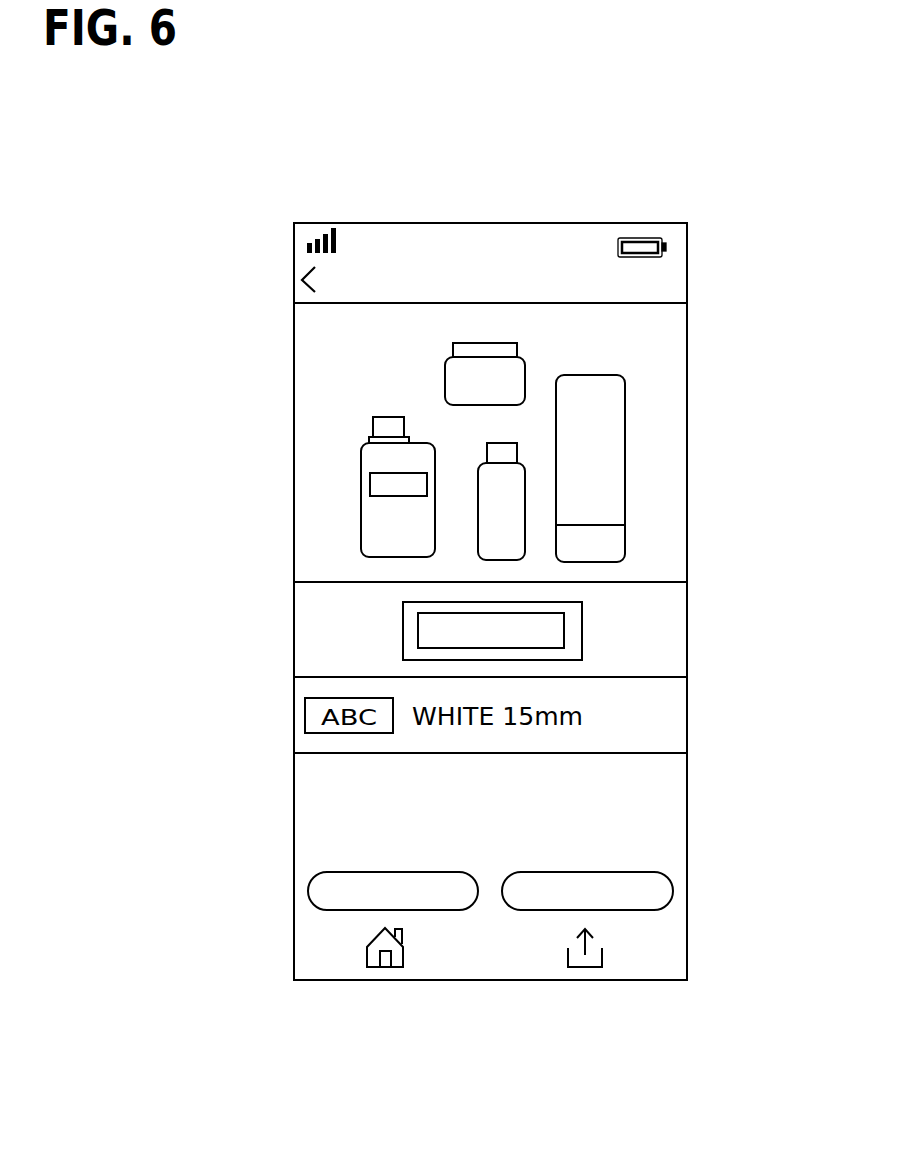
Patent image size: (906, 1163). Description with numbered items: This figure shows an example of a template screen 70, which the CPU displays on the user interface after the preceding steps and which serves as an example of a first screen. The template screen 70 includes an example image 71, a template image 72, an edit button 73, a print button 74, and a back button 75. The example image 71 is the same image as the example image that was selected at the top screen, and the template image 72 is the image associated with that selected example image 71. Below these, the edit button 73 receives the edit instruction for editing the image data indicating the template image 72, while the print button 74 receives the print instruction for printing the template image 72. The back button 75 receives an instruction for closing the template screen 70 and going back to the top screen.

The template screen 70 is at (605, 222).
The example image 71 is at (657, 449).
The template image 72 is at (557, 632).
The edit button 73 is at (325, 888).
The print button 74 is at (663, 883).
The back button 75 is at (302, 278).